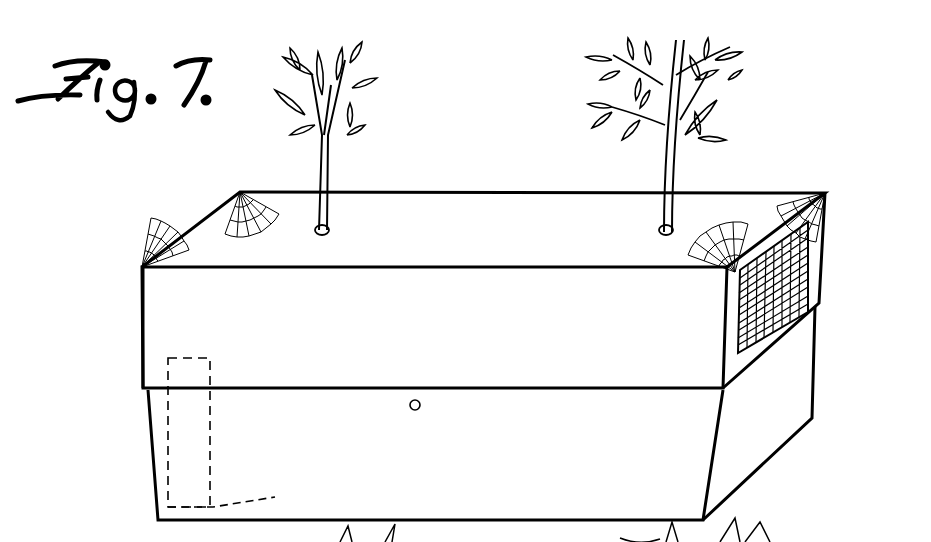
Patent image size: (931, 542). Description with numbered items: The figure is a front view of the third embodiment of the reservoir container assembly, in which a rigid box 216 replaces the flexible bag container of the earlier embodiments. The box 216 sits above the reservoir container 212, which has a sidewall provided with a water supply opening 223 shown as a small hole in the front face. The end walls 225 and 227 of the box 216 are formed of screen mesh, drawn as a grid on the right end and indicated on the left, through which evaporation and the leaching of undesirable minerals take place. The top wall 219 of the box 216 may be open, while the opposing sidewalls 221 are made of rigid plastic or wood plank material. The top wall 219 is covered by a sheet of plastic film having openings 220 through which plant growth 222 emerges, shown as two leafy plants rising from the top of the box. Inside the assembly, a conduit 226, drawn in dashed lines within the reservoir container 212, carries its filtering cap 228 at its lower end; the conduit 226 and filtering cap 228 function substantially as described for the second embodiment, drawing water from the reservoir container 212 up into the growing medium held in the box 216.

The reservoir container 212 is at (125, 466).
The rigid box 216 is at (126, 351).
The top wall 219 is at (466, 222).
The openings 220 is at (335, 230).
The sidewalls 221 is at (528, 180).
The plant growth 222 is at (330, 197).
The water supply opening 223 is at (418, 410).
The end wall 225 is at (797, 233).
The conduit 226 is at (210, 445).
The end wall 227 is at (142, 321).
The filtering cap 228 is at (252, 504).